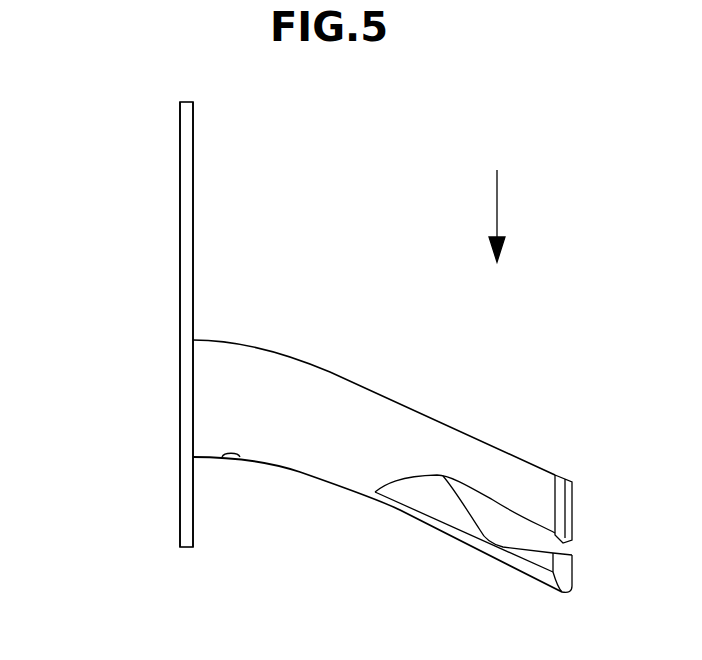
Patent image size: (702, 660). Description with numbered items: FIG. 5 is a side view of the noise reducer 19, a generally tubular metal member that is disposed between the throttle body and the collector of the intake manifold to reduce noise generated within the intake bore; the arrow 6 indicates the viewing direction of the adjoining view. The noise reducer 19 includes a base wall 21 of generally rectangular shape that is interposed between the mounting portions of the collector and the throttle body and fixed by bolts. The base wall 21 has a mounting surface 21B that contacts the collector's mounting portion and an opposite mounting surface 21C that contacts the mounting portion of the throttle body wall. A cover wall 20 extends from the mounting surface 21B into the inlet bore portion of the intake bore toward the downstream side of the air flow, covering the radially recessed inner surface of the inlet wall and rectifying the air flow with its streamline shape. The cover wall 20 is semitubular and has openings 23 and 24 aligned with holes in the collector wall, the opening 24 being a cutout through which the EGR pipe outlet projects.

The base wall 21 is at (185, 163).
The mounting surface 21B is at (194, 218).
The opposite mounting surface 21C is at (180, 262).
The cover wall 20 is at (363, 377).
The noise reducer 19 is at (329, 495).
The opening 23 is at (230, 462).
The opening 24 is at (432, 503).
The viewing direction arrow 6 is at (501, 194).